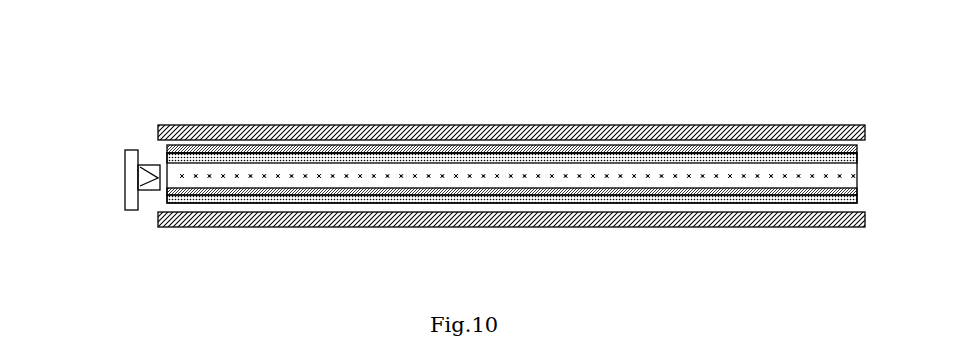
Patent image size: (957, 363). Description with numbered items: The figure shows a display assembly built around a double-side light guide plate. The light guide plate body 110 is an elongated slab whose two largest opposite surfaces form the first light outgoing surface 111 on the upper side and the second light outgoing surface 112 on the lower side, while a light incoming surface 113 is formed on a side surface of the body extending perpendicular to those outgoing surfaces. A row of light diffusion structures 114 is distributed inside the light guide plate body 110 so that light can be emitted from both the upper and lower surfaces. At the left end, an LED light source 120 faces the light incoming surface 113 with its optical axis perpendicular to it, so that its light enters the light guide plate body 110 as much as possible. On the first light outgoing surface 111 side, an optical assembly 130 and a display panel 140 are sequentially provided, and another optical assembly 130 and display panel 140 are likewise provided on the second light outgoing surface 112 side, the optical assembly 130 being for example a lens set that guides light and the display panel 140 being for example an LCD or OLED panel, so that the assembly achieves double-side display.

The light guide plate body 110 is at (471, 164).
The first light outgoing surface 111 is at (430, 160).
The second light outgoing surface 112 is at (435, 188).
The light incoming surface 113 is at (158, 177).
The light diffusion structures 114 is at (633, 170).
The LED light source 120 is at (128, 152).
The optical assembly 130 is at (170, 147).
The display panel 140 is at (197, 128).